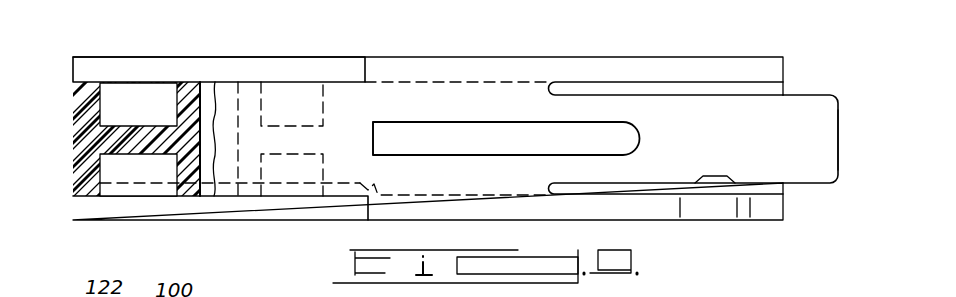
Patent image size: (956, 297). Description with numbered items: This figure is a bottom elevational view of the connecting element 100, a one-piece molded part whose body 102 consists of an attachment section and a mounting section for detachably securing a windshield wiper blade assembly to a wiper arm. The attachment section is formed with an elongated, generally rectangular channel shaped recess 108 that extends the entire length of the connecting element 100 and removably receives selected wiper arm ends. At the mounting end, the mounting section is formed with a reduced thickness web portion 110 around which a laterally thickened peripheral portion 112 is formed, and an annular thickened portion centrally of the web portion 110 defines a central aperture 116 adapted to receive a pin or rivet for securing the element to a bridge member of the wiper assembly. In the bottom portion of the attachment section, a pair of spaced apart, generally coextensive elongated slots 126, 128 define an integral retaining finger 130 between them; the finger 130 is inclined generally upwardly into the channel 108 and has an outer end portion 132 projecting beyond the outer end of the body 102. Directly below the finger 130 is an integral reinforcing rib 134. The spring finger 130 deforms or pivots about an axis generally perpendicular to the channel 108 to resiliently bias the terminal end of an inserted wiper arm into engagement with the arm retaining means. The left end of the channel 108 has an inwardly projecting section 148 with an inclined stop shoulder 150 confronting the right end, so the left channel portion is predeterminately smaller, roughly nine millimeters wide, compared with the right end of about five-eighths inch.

The connecting element 100 is at (244, 55).
The one-piece body 102 is at (430, 90).
The channel shaped recess 108 is at (428, 190).
The reduced thickness web portion 110 is at (122, 135).
The laterally thickened peripheral portion 112 is at (80, 166).
The central aperture 116 is at (200, 157).
The elongated slot 126 is at (658, 84).
The elongated slot 128 is at (666, 190).
The retaining finger 130 is at (742, 153).
The outer end portion 132 is at (817, 132).
The reinforcing rib 134 is at (470, 128).
The inwardly projecting section 148 is at (345, 190).
The inclined stop shoulder 150 is at (372, 182).